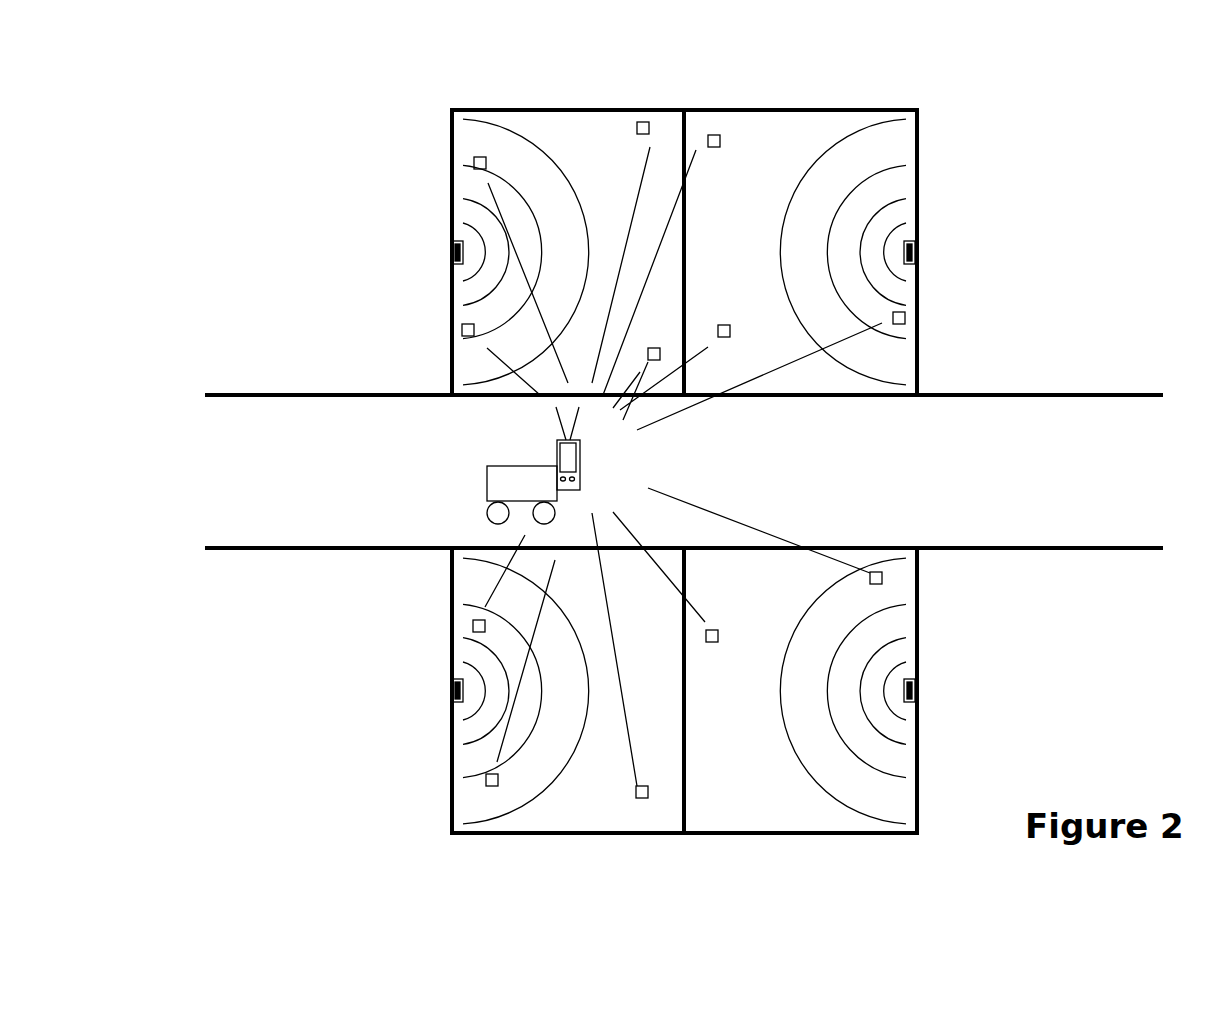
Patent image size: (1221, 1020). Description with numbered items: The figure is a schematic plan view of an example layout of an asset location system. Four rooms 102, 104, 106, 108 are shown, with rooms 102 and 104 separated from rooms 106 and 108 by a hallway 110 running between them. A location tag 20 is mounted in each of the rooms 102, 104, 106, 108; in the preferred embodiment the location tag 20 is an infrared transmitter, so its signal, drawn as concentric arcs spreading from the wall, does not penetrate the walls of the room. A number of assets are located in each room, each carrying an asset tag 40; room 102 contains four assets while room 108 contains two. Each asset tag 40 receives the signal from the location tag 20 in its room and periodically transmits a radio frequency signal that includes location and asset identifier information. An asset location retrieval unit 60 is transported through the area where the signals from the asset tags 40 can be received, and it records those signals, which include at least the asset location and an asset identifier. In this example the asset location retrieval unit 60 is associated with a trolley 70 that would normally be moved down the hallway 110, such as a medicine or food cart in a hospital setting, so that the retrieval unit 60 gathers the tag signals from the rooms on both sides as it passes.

The location tag 20 is at (452, 240).
The asset tag 40 is at (643, 128).
The asset location retrieval unit 60 is at (557, 438).
The trolley 70 is at (487, 482).
The room 102 is at (543, 110).
The room 104 is at (810, 108).
The room 106 is at (545, 833).
The room 108 is at (810, 833).
The hallway 110 is at (1038, 457).